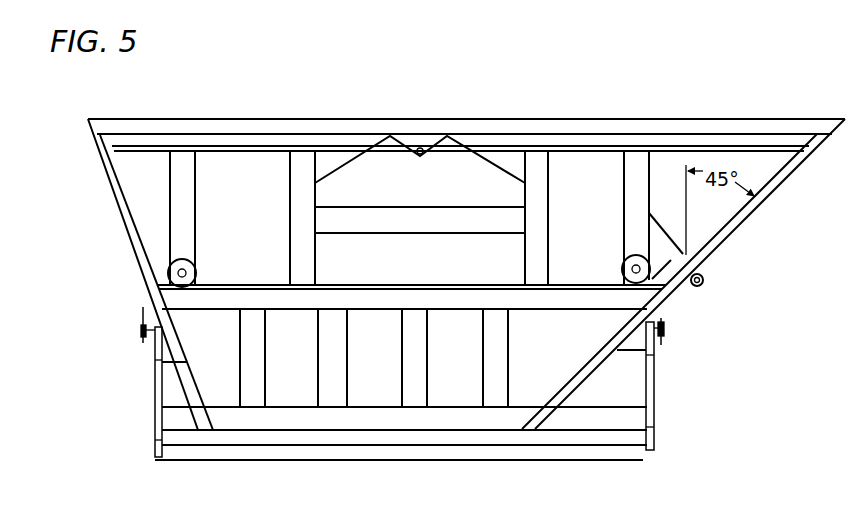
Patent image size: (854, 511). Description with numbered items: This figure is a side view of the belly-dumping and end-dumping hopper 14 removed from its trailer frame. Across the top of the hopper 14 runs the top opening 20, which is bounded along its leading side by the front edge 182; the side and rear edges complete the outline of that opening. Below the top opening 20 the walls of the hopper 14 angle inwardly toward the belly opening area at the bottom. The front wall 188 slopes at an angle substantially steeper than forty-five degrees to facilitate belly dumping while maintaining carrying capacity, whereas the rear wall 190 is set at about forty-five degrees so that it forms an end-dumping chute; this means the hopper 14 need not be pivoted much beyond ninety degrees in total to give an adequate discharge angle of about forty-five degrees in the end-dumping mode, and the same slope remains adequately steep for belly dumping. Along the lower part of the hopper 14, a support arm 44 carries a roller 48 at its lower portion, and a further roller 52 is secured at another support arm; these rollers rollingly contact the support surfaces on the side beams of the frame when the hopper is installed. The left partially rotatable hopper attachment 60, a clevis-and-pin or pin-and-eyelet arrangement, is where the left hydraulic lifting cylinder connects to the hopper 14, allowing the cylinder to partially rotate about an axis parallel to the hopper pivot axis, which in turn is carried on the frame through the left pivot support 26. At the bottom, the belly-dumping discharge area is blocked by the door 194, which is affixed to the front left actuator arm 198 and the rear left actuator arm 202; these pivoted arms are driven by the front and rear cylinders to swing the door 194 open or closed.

The hopper 14 is at (126, 117).
The top opening 20 is at (321, 117).
The left pivot support 26 is at (705, 282).
The support arm 44 is at (191, 218).
The roller 48 is at (197, 272).
The roller 52 is at (621, 270).
The left partially rotatable hopper attachment 60 is at (420, 147).
The front edge 182 is at (88, 120).
The front wall 188 is at (137, 247).
The rear wall 190 is at (727, 237).
The door 194 is at (343, 459).
The left actuator arm 198 is at (154, 413).
The left actuator arm 202 is at (655, 404).